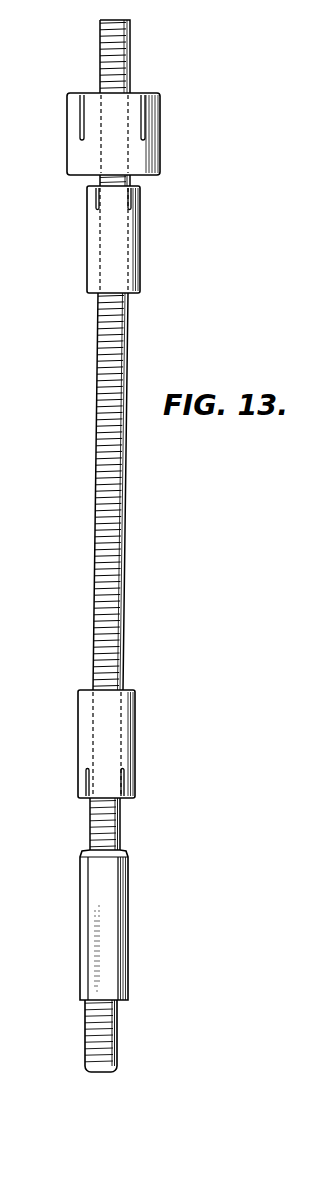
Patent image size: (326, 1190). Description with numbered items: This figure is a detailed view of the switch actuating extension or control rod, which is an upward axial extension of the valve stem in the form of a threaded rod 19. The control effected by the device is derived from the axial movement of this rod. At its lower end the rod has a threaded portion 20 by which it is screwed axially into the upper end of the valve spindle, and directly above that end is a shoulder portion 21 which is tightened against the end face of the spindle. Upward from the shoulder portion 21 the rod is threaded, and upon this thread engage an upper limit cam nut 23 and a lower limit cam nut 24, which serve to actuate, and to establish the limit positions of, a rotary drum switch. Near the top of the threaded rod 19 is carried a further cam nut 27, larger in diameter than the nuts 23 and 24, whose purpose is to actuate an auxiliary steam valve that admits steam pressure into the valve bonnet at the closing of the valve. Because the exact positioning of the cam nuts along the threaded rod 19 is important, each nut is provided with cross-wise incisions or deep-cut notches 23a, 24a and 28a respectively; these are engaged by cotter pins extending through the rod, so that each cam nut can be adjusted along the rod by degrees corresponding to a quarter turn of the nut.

The threaded rod 19 is at (130, 60).
The threaded portion 20 is at (117, 1033).
The shoulder portion 21 is at (128, 928).
The upper limit cam nut 23 is at (140, 243).
The cross-wise incisions or notches 23a is at (97, 208).
The lower limit cam nut 24 is at (135, 748).
The cross-wise incisions or notches 24a is at (125, 785).
The cam nut 27 is at (160, 137).
The cross-wise incisions or notches 28a is at (80, 103).